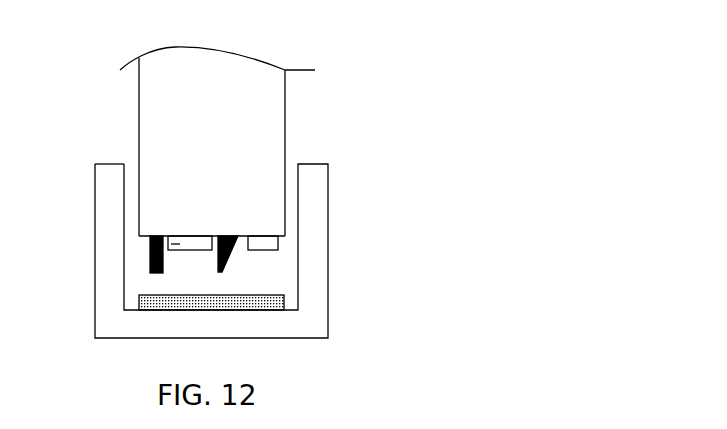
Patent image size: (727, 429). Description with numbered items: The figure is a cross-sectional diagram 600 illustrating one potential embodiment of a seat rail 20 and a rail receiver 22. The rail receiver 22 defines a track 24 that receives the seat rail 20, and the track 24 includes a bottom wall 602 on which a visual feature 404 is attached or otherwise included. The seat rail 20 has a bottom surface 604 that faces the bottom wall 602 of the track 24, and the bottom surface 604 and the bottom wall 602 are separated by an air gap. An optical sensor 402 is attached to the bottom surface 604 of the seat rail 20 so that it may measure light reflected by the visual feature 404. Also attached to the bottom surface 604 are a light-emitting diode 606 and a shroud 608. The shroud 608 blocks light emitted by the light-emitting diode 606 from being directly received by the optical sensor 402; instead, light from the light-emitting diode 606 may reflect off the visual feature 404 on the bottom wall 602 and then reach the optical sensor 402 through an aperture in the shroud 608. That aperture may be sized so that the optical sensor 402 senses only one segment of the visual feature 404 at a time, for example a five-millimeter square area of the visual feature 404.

The cross-sectional diagram 600 is at (543, 81).
The seat rail 20 is at (265, 142).
The rail receiver 22 is at (313, 182).
The track 24 is at (129, 152).
The optical sensor 402 is at (150, 245).
The visual feature 404 is at (152, 303).
The bottom wall 602 is at (219, 299).
The bottom surface 604 is at (217, 233).
The light-emitting diode (LED) 606 is at (280, 243).
The shroud 608 is at (208, 242).